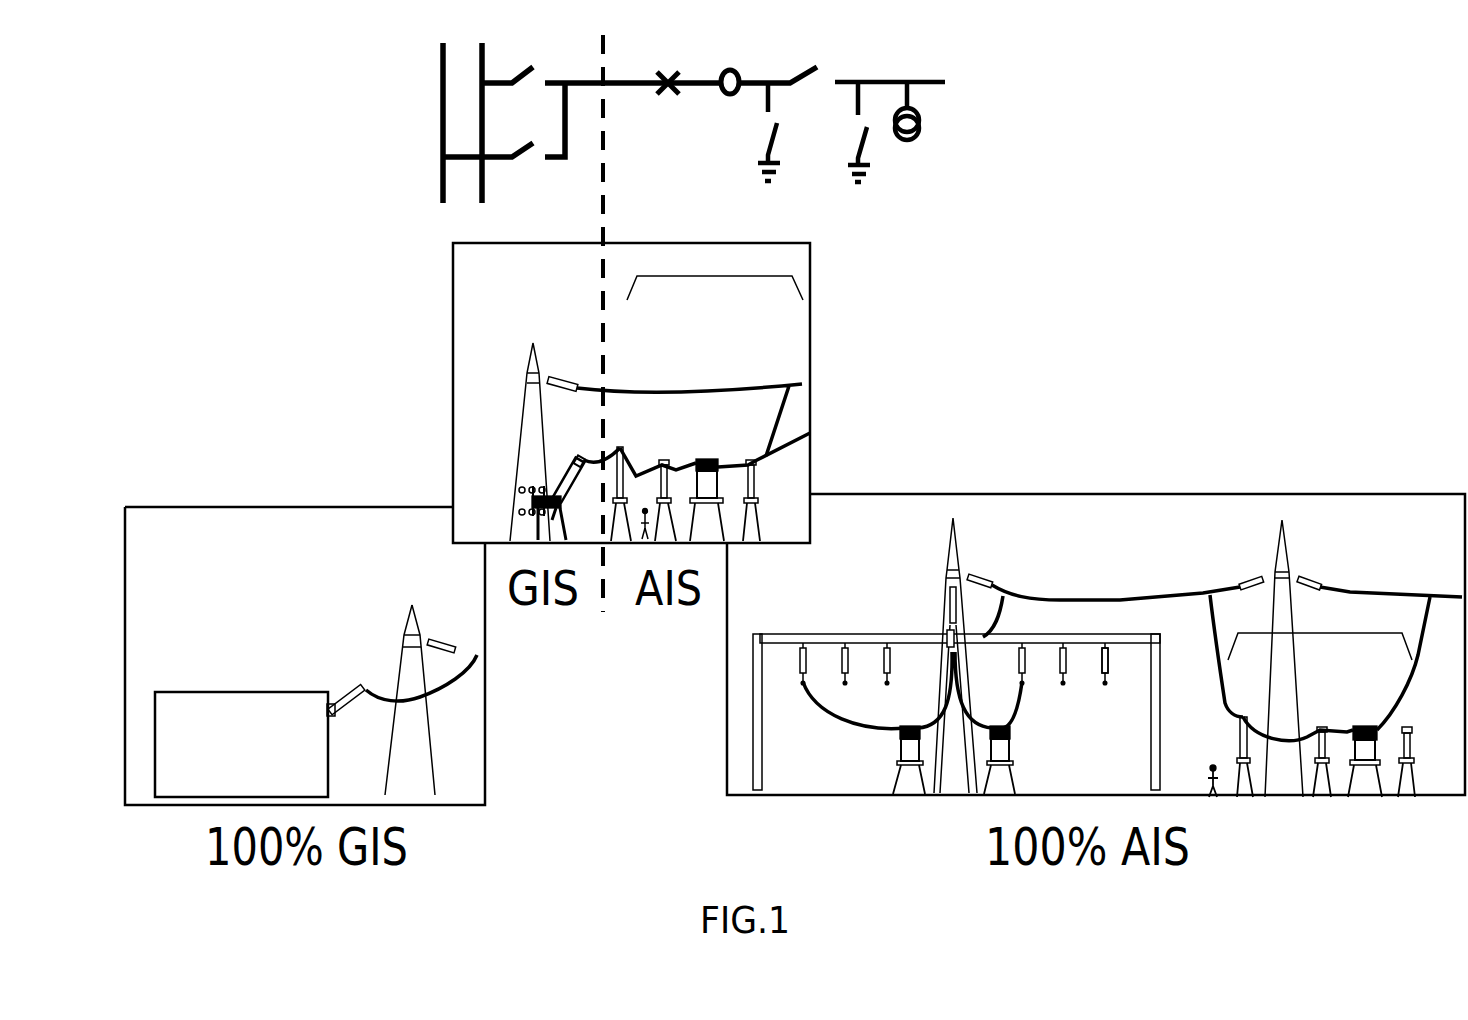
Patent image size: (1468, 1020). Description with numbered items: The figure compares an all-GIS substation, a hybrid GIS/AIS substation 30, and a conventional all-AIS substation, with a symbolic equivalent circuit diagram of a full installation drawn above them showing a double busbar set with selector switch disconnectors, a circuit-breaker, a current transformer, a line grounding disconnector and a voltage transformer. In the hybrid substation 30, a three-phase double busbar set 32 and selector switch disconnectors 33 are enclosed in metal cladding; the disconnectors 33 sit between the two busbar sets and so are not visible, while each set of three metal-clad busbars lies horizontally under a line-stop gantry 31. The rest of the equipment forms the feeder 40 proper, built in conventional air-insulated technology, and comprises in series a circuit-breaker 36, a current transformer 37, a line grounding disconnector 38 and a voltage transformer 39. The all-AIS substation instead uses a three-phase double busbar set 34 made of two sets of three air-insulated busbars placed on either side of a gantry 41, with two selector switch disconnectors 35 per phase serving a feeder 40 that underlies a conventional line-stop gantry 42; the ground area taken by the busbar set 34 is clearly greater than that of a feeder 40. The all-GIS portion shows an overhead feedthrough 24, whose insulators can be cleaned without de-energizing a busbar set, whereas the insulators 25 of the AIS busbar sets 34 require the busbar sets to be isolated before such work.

The overhead feedthrough 24 is at (348, 690).
The insulator 25 is at (1108, 660).
The hybrid (GIS/AIS) substation 30 is at (424, 332).
The line-stop gantry 31 is at (517, 410).
The three-phase double busbar set 32 is at (518, 499).
The selector switch disconnectors 33 is at (569, 494).
The three-phase double busbar set 34 is at (1065, 683).
The selector switch disconnectors 35 is at (908, 740).
The circuit-breaker 36 is at (633, 445).
The current transformer 37 is at (670, 457).
The line grounding disconnector 38 is at (717, 457).
The voltage transformer 39 is at (760, 462).
The feeder 40 is at (707, 275).
The gantry 41 is at (960, 560).
The line-stop gantry 42 is at (1281, 517).